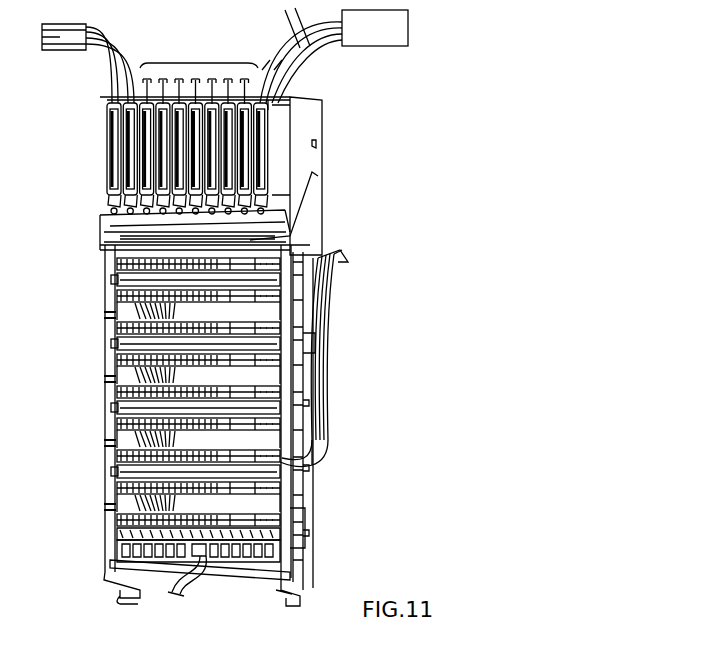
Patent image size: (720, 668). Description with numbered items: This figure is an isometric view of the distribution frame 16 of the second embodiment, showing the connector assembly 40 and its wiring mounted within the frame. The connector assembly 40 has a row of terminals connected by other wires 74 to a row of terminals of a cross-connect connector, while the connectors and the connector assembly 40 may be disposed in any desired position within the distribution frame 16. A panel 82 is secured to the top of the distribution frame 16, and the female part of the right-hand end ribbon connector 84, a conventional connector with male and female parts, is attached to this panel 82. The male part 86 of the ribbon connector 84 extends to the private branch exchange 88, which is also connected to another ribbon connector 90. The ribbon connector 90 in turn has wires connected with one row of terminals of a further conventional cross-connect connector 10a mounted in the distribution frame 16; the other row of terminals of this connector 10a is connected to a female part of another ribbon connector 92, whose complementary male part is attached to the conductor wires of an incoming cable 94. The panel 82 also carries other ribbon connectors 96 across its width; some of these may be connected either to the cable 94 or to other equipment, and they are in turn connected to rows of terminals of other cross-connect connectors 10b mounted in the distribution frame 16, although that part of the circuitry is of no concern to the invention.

The cross-connect connector 10a is at (115, 266).
The cross-connect connectors 10b is at (114, 360).
The distribution frame 16 is at (95, 438).
The connector assembly 40 is at (162, 565).
The wires 74 is at (296, 512).
The panel 82 is at (317, 185).
The ribbon connector 84 is at (278, 118).
The male part 86 is at (288, 140).
The private branch exchange 88 is at (404, 46).
The ribbon connector 90 is at (264, 78).
The ribbon connector 92 is at (100, 126).
The incoming cable 94 is at (80, 50).
The ribbon connectors 96 is at (200, 62).